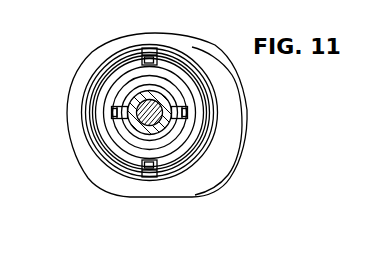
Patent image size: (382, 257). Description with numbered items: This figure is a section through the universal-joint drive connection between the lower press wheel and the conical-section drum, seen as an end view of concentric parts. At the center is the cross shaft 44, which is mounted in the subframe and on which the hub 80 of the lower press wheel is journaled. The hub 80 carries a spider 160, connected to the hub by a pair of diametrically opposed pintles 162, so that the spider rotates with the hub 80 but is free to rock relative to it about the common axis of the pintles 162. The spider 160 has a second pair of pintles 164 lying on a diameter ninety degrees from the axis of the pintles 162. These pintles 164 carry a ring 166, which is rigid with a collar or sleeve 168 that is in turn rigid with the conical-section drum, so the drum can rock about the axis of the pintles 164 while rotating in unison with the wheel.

The cross shaft 44 is at (142, 126).
The hub 80 is at (148, 136).
The spider 160 is at (108, 97).
The pintles 162 is at (111, 115).
The pintles 164 is at (152, 48).
The ring 166 is at (181, 56).
The collar or sleeve 168 is at (236, 88).